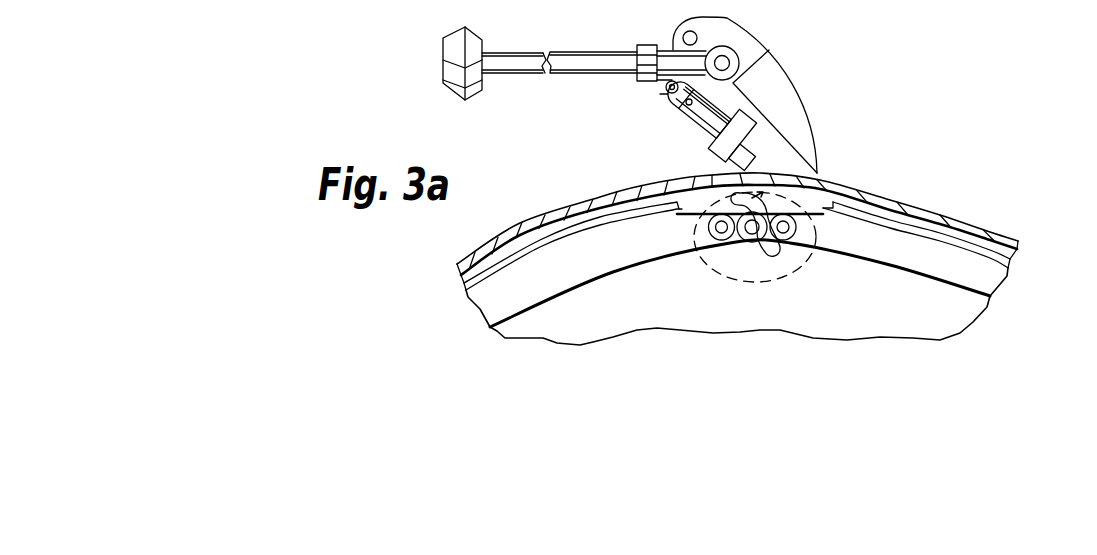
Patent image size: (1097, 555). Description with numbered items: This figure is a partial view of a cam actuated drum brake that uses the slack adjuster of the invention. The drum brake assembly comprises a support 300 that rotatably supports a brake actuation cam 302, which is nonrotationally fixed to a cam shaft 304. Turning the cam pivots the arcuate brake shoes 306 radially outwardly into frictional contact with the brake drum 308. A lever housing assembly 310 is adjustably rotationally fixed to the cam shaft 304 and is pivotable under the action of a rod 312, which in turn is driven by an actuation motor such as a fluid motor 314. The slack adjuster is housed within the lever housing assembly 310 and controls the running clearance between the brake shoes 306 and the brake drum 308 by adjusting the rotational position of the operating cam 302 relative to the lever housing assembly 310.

The support 300 is at (968, 317).
The brake actuation cam 302 is at (751, 229).
The cam shaft 304 is at (754, 231).
The arcuate brake shoes 306 is at (597, 260).
The brake drum 308 is at (927, 200).
The lever housing assembly 310 is at (825, 151).
The rod 312 is at (515, 78).
The fluid motor 314 is at (453, 85).